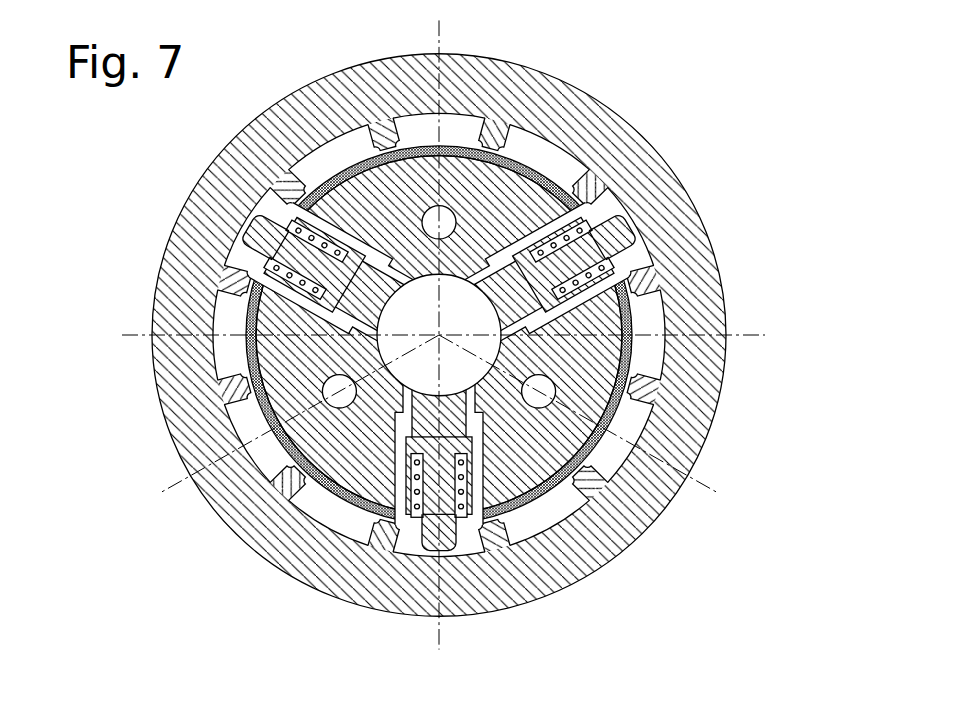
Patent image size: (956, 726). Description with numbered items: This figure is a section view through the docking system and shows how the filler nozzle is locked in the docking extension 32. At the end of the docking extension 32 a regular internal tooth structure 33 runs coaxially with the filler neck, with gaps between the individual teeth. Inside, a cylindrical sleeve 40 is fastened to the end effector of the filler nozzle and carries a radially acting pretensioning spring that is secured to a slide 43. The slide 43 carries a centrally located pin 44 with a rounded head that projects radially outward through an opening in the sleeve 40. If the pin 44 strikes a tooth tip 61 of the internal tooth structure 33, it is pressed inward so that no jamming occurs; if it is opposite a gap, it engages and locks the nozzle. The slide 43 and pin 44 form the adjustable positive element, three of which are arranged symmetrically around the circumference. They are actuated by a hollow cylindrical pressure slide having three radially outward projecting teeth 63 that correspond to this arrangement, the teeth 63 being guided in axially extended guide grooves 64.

The docking extension 32 is at (688, 270).
The internal tooth structure 33 is at (310, 166).
The cylindrical sleeve 40 is at (717, 405).
The slide 43 is at (550, 217).
The pin 44 is at (612, 227).
The tooth tip 61 is at (495, 158).
The teeth 63 is at (377, 287).
The guide grooves 64 is at (251, 362).